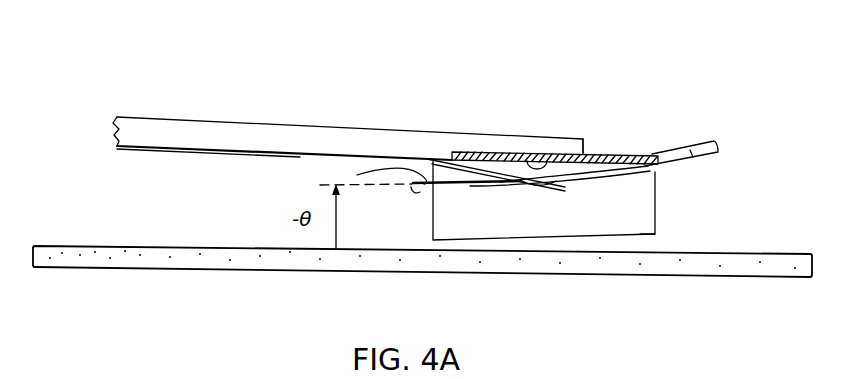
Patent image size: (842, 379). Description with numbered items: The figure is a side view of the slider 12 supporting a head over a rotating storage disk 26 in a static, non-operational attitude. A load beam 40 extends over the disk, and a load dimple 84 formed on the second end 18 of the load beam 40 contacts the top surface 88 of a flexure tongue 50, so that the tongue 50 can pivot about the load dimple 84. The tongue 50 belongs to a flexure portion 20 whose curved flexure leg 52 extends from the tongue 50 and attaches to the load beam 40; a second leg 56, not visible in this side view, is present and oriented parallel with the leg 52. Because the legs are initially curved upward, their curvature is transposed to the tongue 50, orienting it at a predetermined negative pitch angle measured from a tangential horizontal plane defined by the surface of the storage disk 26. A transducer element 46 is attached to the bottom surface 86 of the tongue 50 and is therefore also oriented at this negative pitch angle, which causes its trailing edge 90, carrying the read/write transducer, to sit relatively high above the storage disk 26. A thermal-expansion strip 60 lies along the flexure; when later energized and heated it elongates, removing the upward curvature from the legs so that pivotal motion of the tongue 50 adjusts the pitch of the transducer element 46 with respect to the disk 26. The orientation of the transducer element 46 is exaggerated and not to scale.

The slider 12 is at (118, 91).
The flexure portion 20 is at (666, 77).
The load beam 40 is at (273, 122).
The second end 18 is at (552, 133).
The load dimple 84 is at (584, 153).
The thermal-expansion strip 60 is at (641, 153).
The tongue 50 is at (430, 158).
The leg 56 is at (436, 158).
The transducer element 46 is at (655, 201).
The trailing edge 90 is at (647, 236).
The flexure leg 52 is at (538, 190).
The top surface 88 is at (363, 170).
The bottom surface 86 is at (400, 207).
The storage disk 26 is at (130, 268).